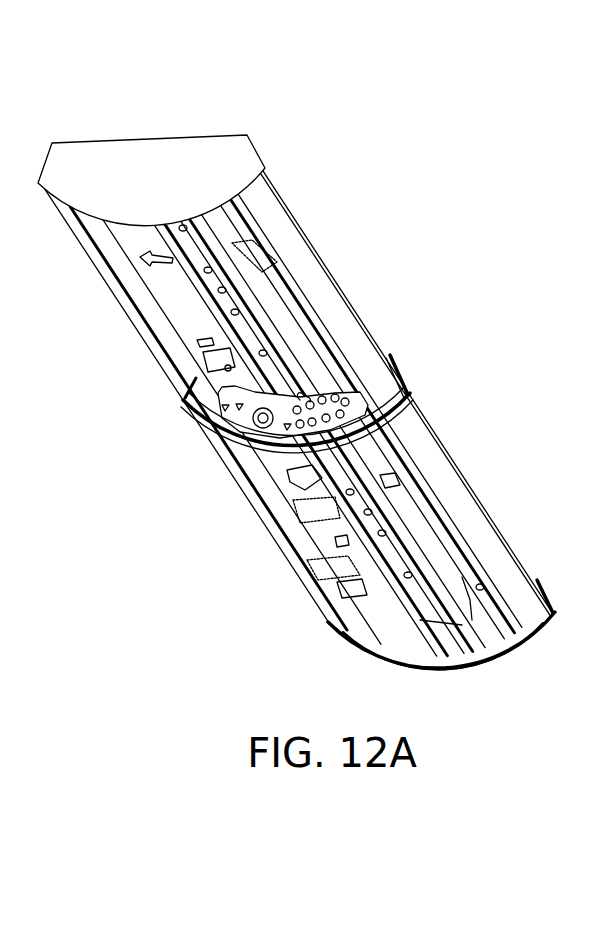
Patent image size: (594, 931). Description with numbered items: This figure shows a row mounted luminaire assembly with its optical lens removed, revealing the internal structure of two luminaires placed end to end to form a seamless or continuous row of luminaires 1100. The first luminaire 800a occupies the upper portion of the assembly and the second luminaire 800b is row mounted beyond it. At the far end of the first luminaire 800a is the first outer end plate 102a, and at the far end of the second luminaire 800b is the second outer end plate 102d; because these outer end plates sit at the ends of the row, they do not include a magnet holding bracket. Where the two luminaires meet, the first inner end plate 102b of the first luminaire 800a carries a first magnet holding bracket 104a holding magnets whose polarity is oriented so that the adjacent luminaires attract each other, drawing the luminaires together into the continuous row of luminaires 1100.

The first outer end plate 102a is at (135, 160).
The first inner end plate 102b is at (207, 387).
The second outer end plate 102d is at (510, 653).
The first magnet holding bracket 104a is at (253, 445).
The first luminaire 800a is at (328, 238).
The second luminaire 800b is at (498, 498).
The continuous row of luminaires 1100 is at (417, 348).